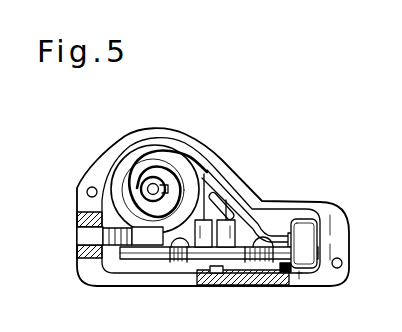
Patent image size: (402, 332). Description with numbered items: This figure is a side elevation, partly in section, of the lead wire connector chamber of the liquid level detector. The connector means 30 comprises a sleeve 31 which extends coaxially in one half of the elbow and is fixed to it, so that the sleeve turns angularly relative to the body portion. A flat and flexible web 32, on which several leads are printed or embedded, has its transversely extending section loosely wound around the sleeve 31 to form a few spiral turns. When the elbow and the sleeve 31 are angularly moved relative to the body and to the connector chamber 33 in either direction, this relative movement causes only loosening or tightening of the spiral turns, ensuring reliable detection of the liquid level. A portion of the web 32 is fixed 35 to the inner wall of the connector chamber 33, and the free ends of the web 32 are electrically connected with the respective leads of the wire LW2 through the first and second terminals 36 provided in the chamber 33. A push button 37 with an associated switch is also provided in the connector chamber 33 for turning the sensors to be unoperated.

The connector means 30 is at (170, 122).
The sleeve 31 is at (153, 176).
The flat and flexible web 32 is at (158, 160).
The connector chamber 33 is at (298, 209).
The fixed portion of the lead web 35 is at (207, 173).
The first and second terminals 36 is at (203, 244).
The push button 37 is at (80, 236).
The wire LW2 is at (320, 272).